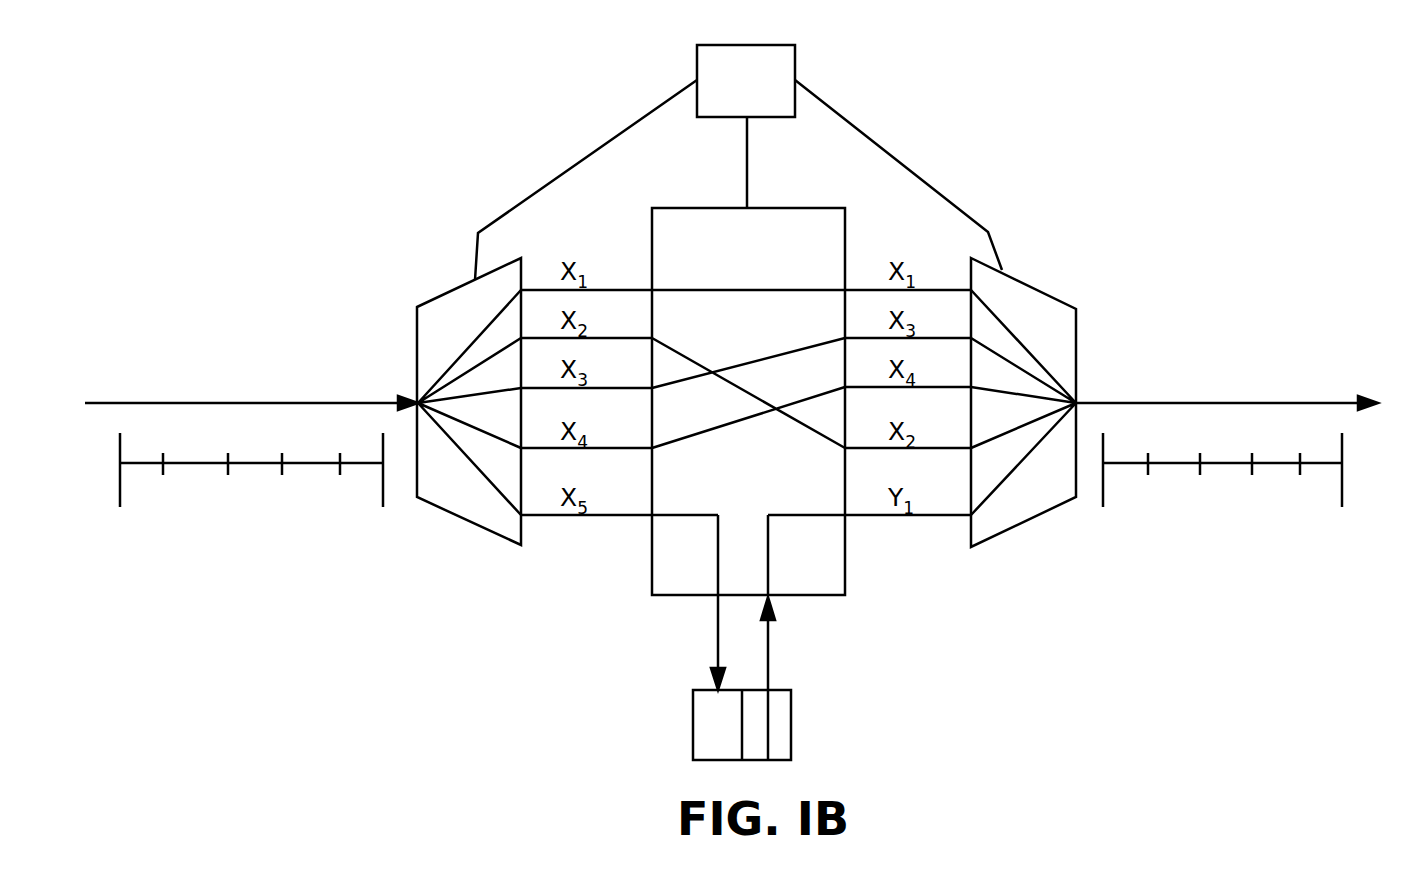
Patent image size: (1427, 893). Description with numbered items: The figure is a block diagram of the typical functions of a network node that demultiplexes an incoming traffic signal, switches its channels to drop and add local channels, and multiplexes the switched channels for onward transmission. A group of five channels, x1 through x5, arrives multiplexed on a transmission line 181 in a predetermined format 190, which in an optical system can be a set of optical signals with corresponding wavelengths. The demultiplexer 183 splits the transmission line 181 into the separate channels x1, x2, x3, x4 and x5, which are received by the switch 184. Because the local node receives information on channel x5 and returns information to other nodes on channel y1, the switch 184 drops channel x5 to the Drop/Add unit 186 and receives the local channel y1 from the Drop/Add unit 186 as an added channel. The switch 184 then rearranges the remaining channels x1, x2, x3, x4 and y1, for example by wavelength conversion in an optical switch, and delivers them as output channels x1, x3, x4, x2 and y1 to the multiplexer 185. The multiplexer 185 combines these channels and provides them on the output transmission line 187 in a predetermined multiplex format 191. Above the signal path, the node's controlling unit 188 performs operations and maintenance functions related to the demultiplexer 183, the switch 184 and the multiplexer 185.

The transmission line 181 is at (240, 401).
The demultiplexer 183 is at (450, 513).
The switch 184 is at (845, 578).
The multiplexer 185 is at (1043, 515).
The Drop/Add unit 186 is at (791, 712).
The output transmission line 187 is at (1157, 401).
The controlling unit 188 is at (795, 66).
The predetermined format 190 is at (118, 485).
The predetermined multiplex format 191 is at (1342, 497).